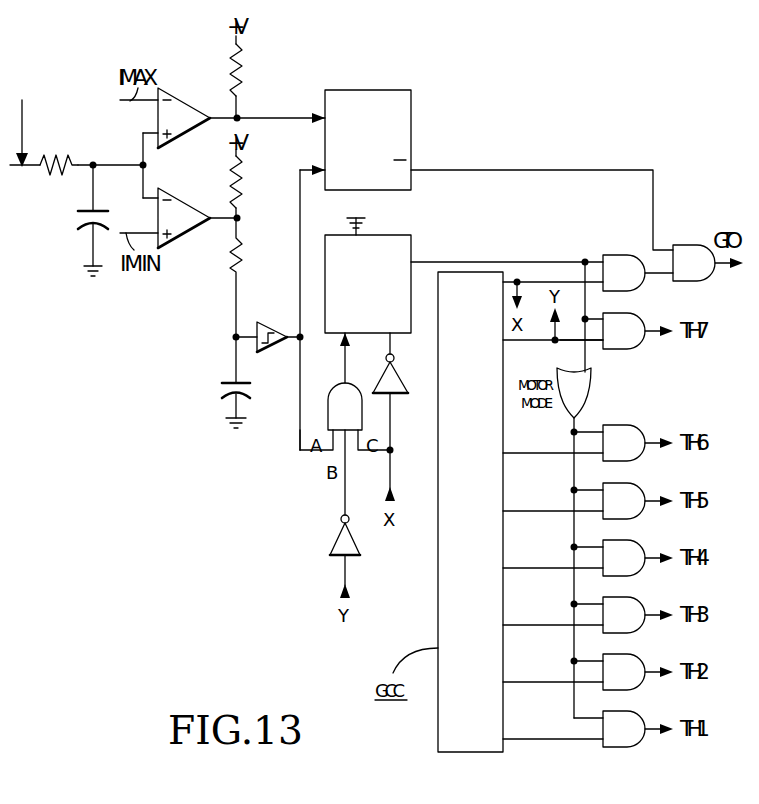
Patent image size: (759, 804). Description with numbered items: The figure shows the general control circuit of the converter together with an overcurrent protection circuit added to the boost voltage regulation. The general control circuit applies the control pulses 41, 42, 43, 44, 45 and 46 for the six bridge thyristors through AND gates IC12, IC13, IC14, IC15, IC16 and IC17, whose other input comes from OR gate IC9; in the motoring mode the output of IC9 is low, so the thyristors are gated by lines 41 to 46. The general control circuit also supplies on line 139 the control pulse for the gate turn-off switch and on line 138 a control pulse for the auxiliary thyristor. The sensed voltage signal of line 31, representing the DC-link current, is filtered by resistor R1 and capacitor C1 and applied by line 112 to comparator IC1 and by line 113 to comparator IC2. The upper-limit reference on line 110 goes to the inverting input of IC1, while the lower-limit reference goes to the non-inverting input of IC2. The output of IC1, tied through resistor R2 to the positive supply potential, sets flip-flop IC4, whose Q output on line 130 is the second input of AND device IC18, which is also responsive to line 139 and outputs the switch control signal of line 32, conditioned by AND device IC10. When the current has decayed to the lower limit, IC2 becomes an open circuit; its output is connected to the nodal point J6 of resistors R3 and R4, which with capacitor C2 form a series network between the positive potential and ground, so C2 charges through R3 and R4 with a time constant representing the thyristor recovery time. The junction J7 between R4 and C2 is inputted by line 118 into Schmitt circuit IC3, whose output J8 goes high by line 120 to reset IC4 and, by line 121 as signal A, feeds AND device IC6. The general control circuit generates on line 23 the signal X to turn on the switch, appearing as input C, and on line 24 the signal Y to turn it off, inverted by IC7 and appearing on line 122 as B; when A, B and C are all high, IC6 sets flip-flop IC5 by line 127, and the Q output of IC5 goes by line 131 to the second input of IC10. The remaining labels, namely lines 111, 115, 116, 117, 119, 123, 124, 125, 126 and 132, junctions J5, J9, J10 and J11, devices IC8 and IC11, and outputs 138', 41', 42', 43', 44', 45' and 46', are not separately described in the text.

The line 31 is at (26, 122).
The line 110 is at (128, 103).
The IMIN input line 111 is at (150, 231).
The line 112 is at (143, 144).
The line 113 is at (147, 180).
The comparator IC2 output 115 is at (217, 224).
The +V supply to R2 116 is at (236, 42).
The +V supply to R3 117 is at (236, 156).
The line 118 is at (248, 339).
The ground connection to D input 119 is at (347, 226).
The line 120 is at (300, 262).
The line 121 is at (300, 437).
The line 122 is at (345, 497).
The X signal line 123 is at (390, 478).
The Y signal line 124 is at (348, 572).
The C input line of IC6 125 is at (393, 449).
The inverter IC8 output 126 is at (396, 355).
The line 127 is at (343, 368).
The line 130 is at (484, 170).
The line 131 is at (457, 262).
The IC10 output line 132 is at (656, 278).
The line 138 is at (553, 357).
The TH7 output 138' is at (663, 353).
The line 139 is at (573, 266).
The line 23 is at (520, 292).
The line 24 is at (558, 332).
The line 32 is at (722, 270).
The control pulse 41 is at (553, 726).
The control pulse 42 is at (553, 669).
The control pulse 43 is at (553, 612).
The control pulse 44 is at (553, 555).
The control pulse 45 is at (553, 498).
The control pulse 46 is at (553, 440).
The TH1 output 41' is at (666, 746).
The TH2 output 42' is at (666, 689).
The TH3 output 43' is at (666, 632).
The TH4 output 44' is at (666, 575).
The TH5 output 45' is at (666, 518).
The TH6 output 46' is at (666, 460).
The resistor R1 is at (52, 160).
The resistor R2 is at (246, 78).
The resistor R3 is at (246, 192).
The resistor R4 is at (250, 277).
The capacitor C1 is at (78, 222).
The capacitor C2 is at (226, 389).
The junction J5 is at (147, 167).
The nodal point J6 is at (237, 218).
The junction J7 is at (236, 337).
The output J8 is at (304, 338).
The junction J9 is at (393, 453).
The junction J10 is at (528, 270).
The junction J11 is at (560, 344).
The comparator IC1 is at (164, 119).
The comparator IC2 is at (186, 208).
The Schmitt circuit IC3 is at (275, 320).
The flip-flop IC4 is at (340, 90).
The flip-flop IC5 is at (386, 235).
The AND device IC6 is at (345, 406).
The inverter IC7 is at (332, 543).
The inverter IC8 is at (404, 388).
The OR gate IC9 is at (574, 393).
The AND device IC10 is at (624, 273).
The AND gate IC11 is at (624, 331).
The AND gate IC12 is at (624, 443).
The AND gate IC13 is at (624, 501).
The AND gate IC14 is at (624, 558).
The AND gate IC15 is at (624, 615).
The AND gate IC16 is at (624, 672).
The AND gate IC17 is at (624, 729).
The AND device IC18 is at (694, 263).